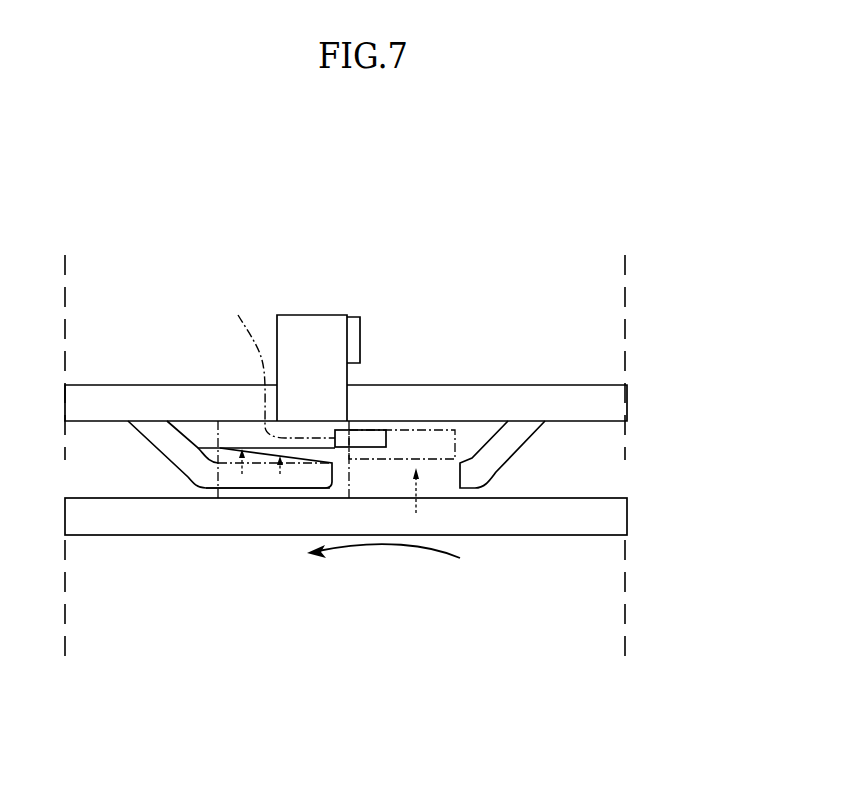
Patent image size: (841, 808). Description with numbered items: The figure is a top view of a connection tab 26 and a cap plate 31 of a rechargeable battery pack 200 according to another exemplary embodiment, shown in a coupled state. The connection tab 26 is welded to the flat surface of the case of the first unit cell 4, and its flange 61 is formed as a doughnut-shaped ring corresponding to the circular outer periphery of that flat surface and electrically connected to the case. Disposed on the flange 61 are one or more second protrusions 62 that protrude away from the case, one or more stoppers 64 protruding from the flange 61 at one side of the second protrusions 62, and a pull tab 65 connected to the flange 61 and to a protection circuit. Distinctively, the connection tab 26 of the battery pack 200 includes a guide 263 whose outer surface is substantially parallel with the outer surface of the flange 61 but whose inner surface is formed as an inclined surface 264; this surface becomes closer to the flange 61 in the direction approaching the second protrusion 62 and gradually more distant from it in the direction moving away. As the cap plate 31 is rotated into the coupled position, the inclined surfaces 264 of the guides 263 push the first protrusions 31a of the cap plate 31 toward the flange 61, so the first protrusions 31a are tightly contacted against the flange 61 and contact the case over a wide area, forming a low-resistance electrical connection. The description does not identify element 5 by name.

The rechargeable battery pack 200 is at (349, 159).
The first unit cell 4 is at (593, 356).
The lower member (glass carrier) 5 is at (593, 562).
The connection tab 26 is at (628, 403).
The cap plate 31 is at (628, 509).
The first protrusion 31a is at (240, 430).
The pull tab 65 is at (328, 330).
The stopper 64 is at (376, 428).
The flange 61 is at (506, 401).
The second protrusion 62 is at (178, 460).
The guide 263 is at (262, 467).
The inclined surface 264 is at (208, 447).